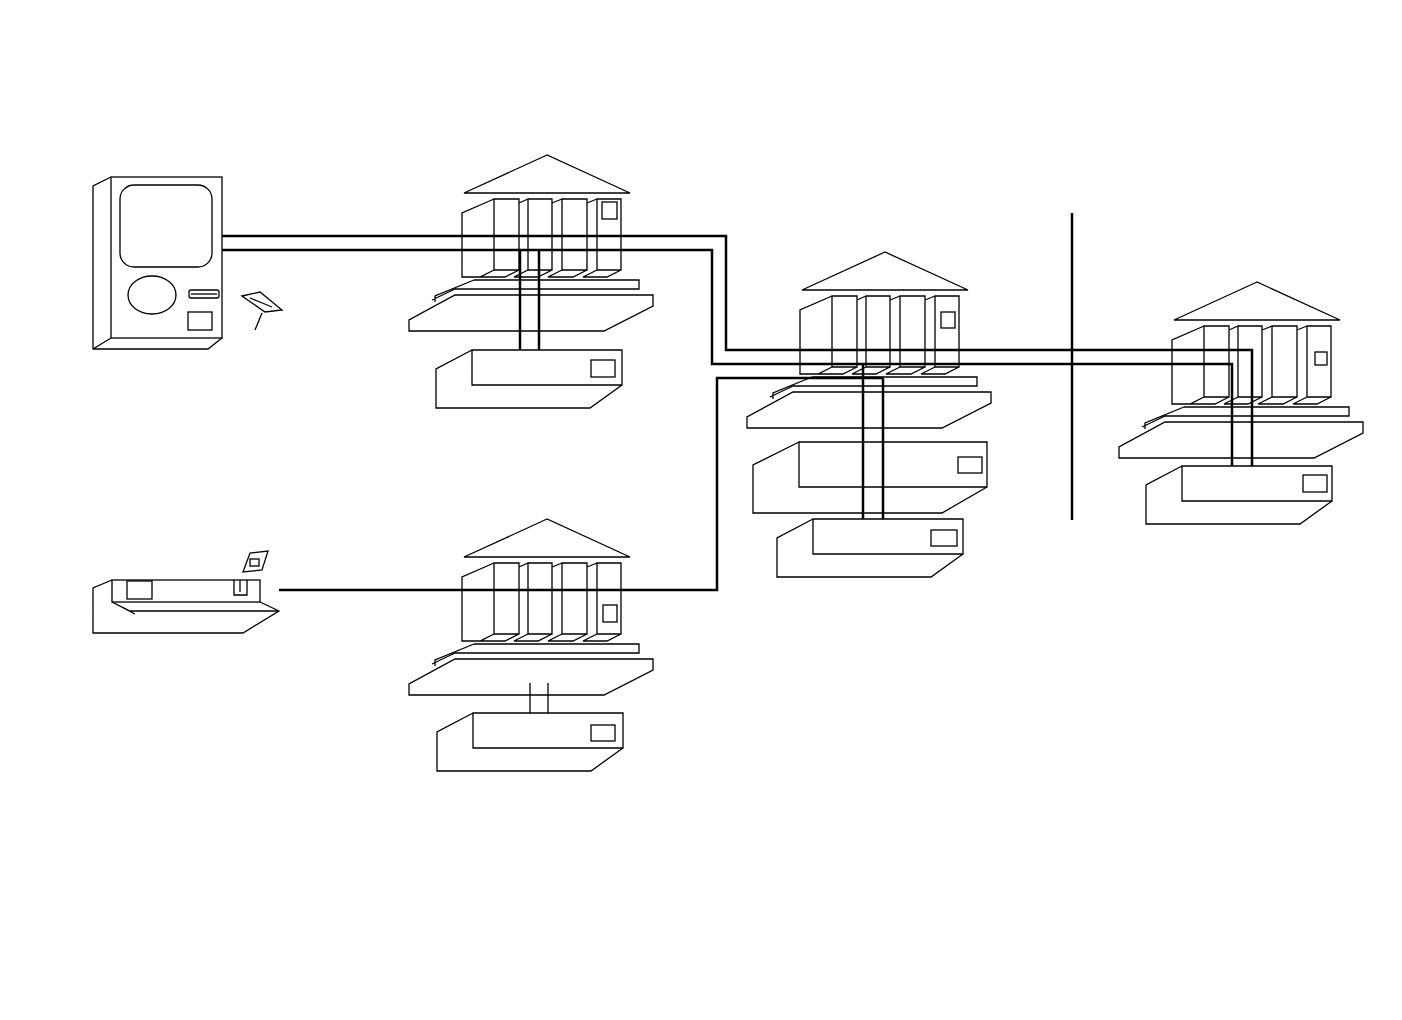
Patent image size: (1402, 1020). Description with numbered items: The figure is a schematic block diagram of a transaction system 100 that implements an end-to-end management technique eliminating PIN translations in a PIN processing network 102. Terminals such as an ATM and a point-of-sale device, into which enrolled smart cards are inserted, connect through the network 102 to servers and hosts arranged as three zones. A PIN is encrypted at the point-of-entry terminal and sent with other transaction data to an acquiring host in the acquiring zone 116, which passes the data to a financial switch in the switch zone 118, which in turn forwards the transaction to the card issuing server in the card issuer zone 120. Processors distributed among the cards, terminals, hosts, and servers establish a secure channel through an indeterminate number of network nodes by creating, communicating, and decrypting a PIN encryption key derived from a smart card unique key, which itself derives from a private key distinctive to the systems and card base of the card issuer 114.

The transaction system 100 is at (1203, 133).
The network 102 is at (1085, 365).
The card issuer 114 is at (1212, 312).
The acquiring zone 116 is at (540, 261).
The switch zone 118 is at (890, 383).
The card issuer zone 120 is at (1248, 377).